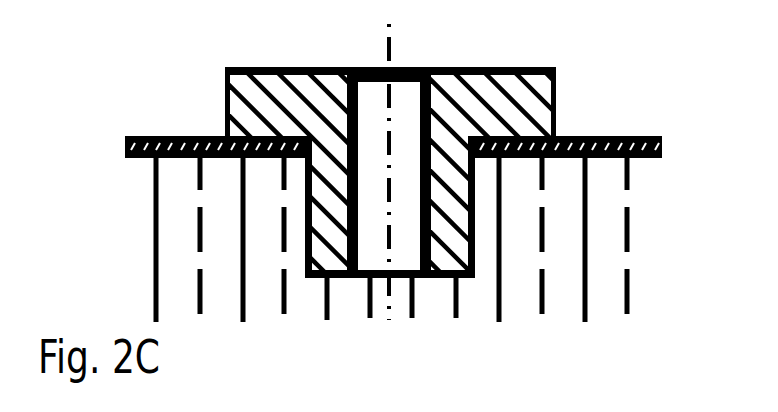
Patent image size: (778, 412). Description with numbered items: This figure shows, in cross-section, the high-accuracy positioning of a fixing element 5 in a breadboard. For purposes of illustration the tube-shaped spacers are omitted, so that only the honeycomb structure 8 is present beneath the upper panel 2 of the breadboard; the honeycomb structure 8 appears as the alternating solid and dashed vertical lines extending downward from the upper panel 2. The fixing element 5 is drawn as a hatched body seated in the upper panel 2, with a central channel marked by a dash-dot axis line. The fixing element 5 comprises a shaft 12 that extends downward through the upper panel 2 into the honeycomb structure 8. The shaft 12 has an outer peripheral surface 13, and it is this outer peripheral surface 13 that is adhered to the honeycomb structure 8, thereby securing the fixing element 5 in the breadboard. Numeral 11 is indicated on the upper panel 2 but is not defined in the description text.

The upper panel 2 is at (622, 136).
The fixing element 5 is at (483, 97).
The honeycomb structure 8 is at (172, 253).
The metal layer 11 is at (168, 125).
The shaft 12 is at (336, 239).
The outer peripheral surface 13 is at (483, 237).